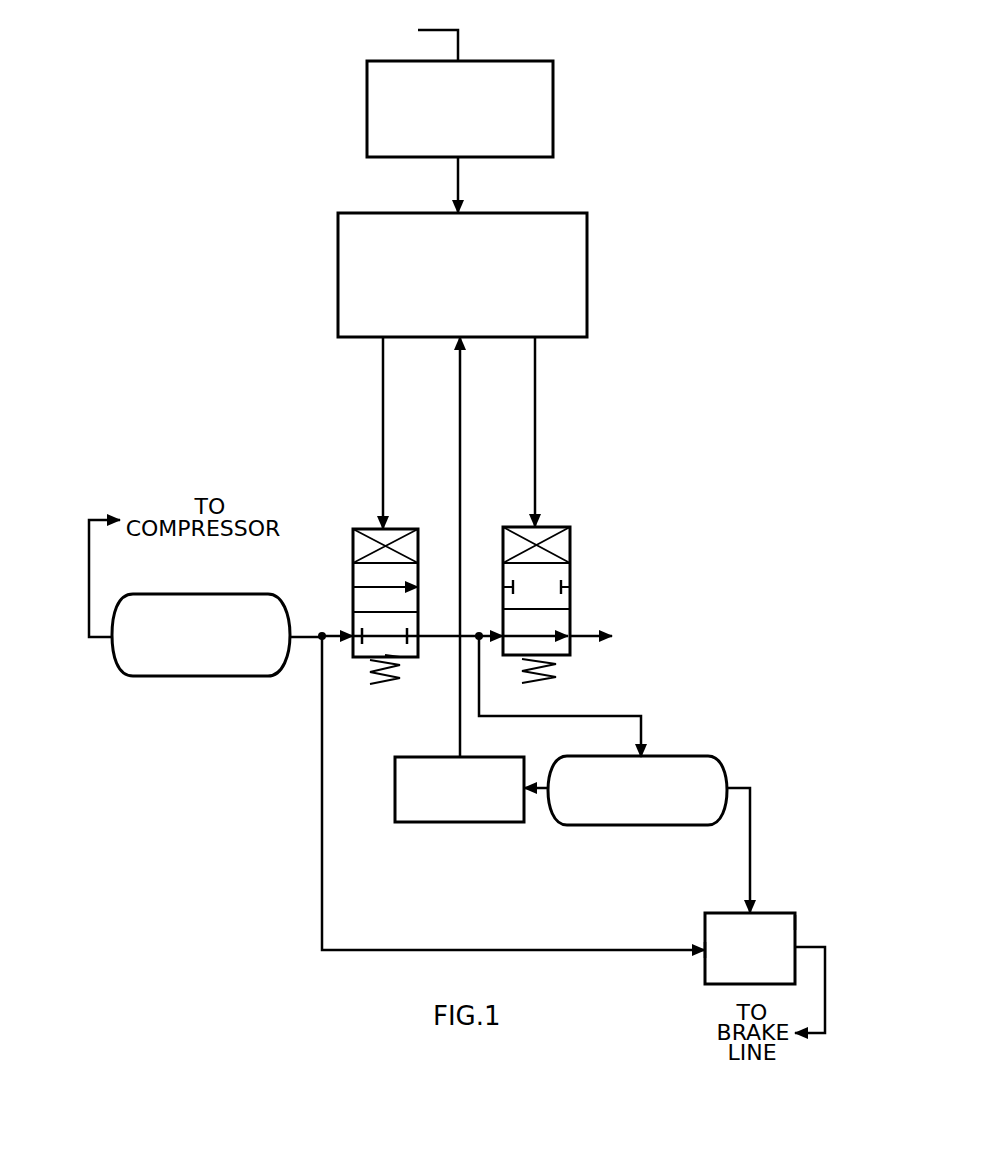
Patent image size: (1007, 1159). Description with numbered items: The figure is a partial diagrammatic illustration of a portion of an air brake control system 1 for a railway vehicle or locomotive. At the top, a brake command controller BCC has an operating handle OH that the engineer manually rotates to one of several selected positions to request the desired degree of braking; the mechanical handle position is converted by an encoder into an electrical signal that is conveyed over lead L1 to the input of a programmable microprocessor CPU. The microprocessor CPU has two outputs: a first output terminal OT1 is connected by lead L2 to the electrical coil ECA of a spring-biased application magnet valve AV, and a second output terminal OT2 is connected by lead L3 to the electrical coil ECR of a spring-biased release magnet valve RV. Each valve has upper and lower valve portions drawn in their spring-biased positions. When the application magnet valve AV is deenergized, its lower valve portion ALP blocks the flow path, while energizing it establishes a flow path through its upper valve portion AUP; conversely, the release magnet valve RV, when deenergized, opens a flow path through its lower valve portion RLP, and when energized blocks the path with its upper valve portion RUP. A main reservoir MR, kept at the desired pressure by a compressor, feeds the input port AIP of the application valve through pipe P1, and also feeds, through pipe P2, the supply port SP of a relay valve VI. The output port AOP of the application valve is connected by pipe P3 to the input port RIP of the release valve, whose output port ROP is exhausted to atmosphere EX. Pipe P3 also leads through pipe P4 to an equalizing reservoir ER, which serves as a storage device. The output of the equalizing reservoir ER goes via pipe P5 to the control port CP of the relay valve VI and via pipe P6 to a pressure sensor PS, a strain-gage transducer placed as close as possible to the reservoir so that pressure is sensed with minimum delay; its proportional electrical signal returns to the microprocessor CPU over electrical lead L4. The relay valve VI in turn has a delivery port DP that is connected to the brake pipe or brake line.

The operating handle OH is at (452, 27).
The brake command controller BCC is at (507, 61).
The lead L1 is at (458, 180).
The microprocessor CPU is at (539, 213).
The first output terminal OT1 is at (381, 340).
The second output terminal OT2 is at (535, 337).
The lead L2 is at (383, 437).
The lead L3 is at (535, 437).
The electrical lead L4 is at (460, 437).
The main reservoir MR is at (193, 677).
The pipe P1 is at (327, 648).
The electrical coil of the application magnet valve ECA is at (380, 533).
The application magnet valve AV is at (354, 567).
The upper valve portion of the application magnet valve AUP is at (360, 597).
The input port of the application magnet valve AIP is at (355, 630).
The output port of the application magnet valve AOP is at (399, 650).
The lower valve portion of the application magnet valve ALP is at (401, 660).
The pipe P3 is at (441, 635).
The electrical coil of the release magnet valve ECR is at (543, 532).
The release magnet valve RV is at (570, 566).
The upper valve portion of the release magnet valve RUP is at (562, 600).
The output port of the release magnet valve ROP is at (570, 632).
The lower valve portion of the release magnet valve RLP is at (565, 648).
The input port of the release magnet valve RIP is at (500, 642).
The air brake control system 1 is at (628, 597).
The atmosphere EX is at (611, 635).
The pipe P4 is at (606, 716).
The pressure sensor PS is at (437, 757).
The equalizing reservoir ER is at (672, 757).
The pipe P6 is at (538, 797).
The pipe P5 is at (750, 838).
The pipe P2 is at (532, 950).
The control port CP is at (753, 913).
The relay valve VI is at (795, 922).
The supply port SP is at (705, 955).
The delivery port DP is at (801, 950).